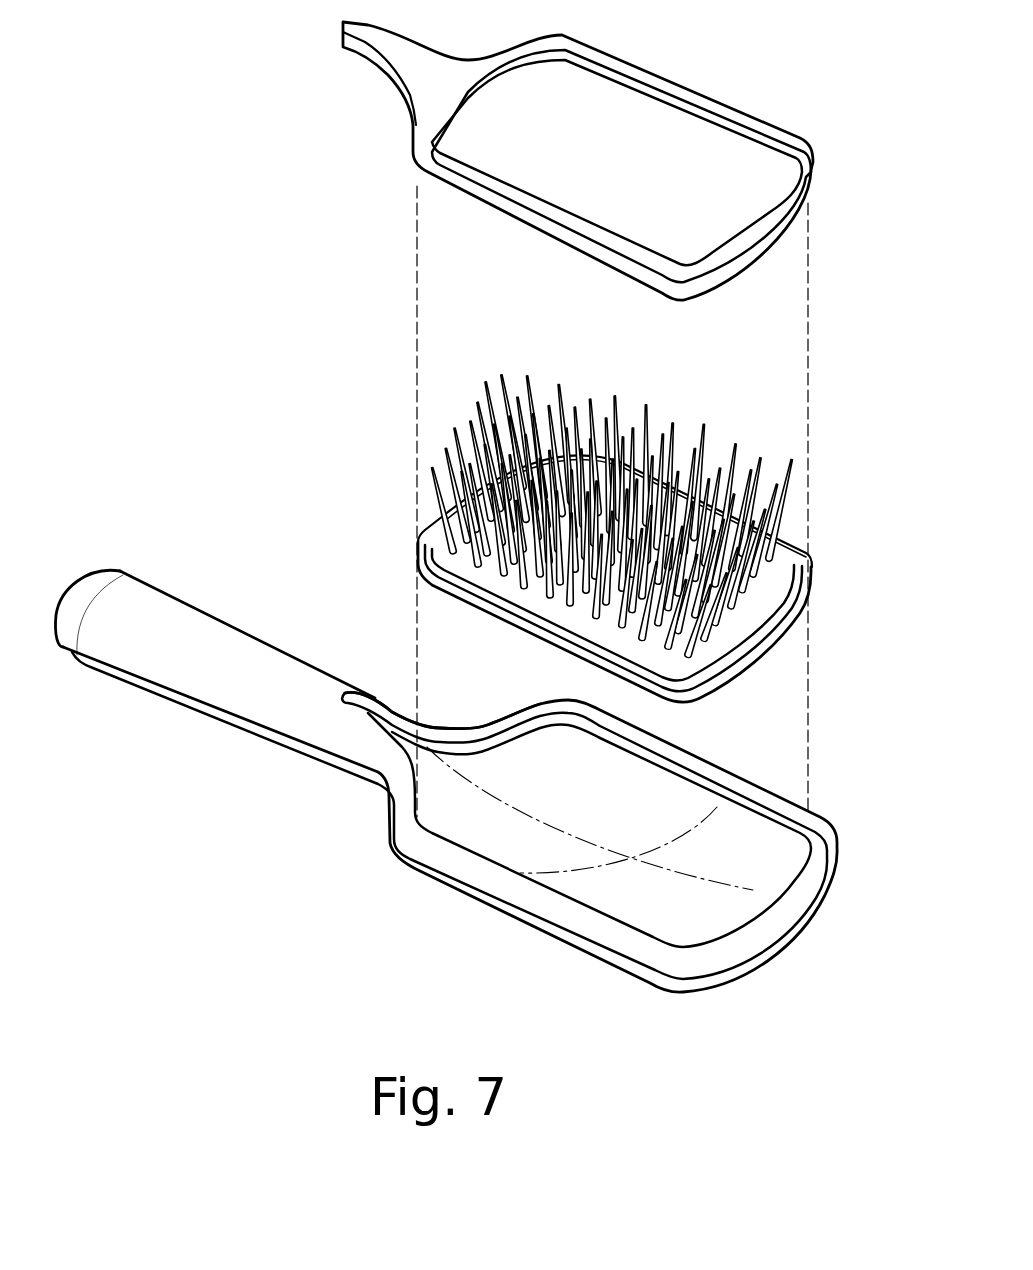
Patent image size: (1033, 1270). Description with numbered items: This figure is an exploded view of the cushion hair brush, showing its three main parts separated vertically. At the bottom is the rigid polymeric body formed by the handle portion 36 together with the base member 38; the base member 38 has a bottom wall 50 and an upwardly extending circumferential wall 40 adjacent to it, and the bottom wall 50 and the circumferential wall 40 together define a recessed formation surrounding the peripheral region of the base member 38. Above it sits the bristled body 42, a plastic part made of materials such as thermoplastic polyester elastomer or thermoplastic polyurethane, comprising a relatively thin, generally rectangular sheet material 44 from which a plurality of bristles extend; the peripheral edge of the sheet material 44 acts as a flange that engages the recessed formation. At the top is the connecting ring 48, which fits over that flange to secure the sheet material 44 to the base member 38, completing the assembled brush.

The handle portion 36 is at (203, 633).
The base member 38 is at (446, 804).
The circumferential wall 40 is at (487, 742).
The bristled body 42 is at (738, 472).
The sheet material 44 is at (651, 538).
The connecting ring 48 is at (652, 80).
The bottom wall 50 is at (600, 790).